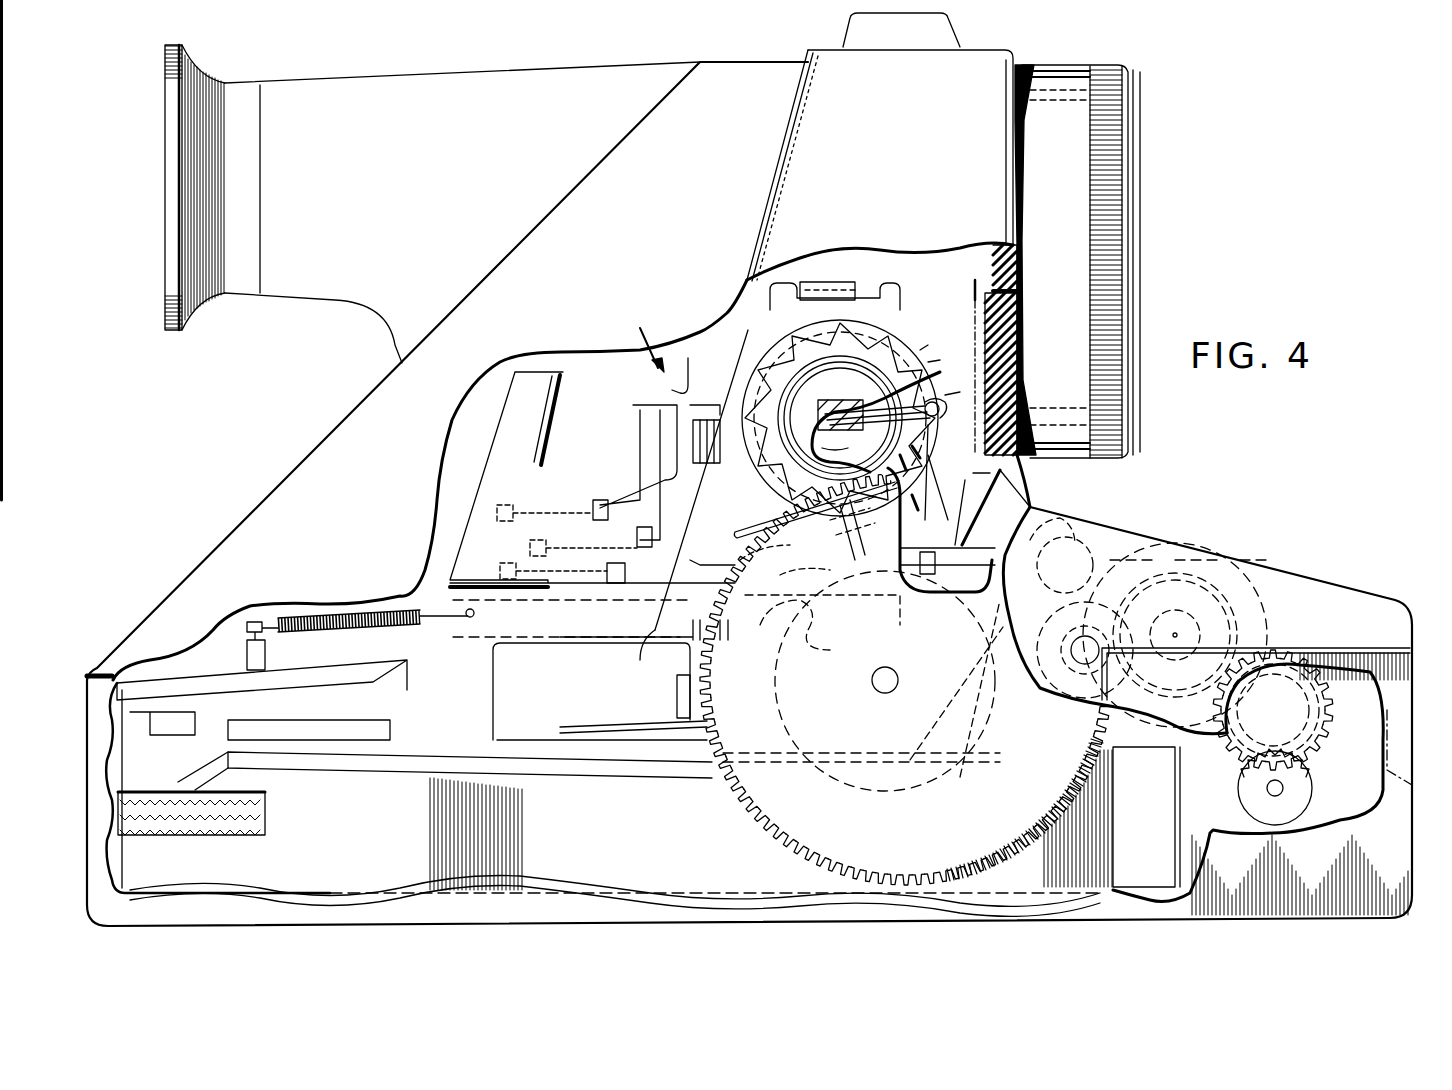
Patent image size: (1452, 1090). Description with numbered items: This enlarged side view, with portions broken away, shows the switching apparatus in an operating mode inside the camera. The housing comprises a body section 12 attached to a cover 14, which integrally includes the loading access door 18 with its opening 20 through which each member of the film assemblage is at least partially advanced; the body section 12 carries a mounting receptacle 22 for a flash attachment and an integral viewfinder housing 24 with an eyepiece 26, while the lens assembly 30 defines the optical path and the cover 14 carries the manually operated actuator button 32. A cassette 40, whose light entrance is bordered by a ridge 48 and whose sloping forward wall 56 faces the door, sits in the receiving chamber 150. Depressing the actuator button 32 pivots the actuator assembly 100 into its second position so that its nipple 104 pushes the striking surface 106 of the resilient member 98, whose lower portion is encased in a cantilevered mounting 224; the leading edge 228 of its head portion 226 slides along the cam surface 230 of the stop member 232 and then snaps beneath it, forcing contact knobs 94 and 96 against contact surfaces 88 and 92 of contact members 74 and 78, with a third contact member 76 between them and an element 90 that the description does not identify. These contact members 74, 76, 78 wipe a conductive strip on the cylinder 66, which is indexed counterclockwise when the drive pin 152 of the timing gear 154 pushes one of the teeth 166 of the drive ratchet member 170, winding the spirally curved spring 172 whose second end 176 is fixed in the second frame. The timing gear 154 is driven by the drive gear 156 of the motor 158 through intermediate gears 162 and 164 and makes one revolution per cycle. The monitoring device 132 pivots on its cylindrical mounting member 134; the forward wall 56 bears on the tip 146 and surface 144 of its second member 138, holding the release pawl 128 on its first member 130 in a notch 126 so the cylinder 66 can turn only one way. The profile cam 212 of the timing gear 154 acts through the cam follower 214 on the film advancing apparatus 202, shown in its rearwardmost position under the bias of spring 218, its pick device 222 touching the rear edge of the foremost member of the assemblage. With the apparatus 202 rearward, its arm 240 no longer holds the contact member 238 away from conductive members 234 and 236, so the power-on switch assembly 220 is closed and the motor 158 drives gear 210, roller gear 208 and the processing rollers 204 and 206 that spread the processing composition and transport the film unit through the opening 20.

The body section 12 is at (647, 270).
The cover 14 is at (900, 192).
The loading access door 18 is at (1412, 823).
The opening 20 is at (1395, 717).
The mounting receptacle 22 is at (950, 30).
The viewfinder housing 24 is at (325, 80).
The eyepiece 26 is at (205, 72).
The lens assembly 30 is at (1100, 64).
The actuator button 32 is at (970, 312).
The cassette 40 is at (336, 836).
The ridge 48 is at (540, 758).
The forward wall 56 is at (618, 765).
The cylinder 66 is at (905, 330).
The contact member 74 is at (805, 505).
The contact member 76 is at (853, 543).
The contact member 78 is at (862, 550).
The contact surface 88 is at (895, 458).
The wire 90 is at (924, 462).
The contact surface 92 is at (941, 530).
The contact knob 94 is at (920, 450).
The contact knob 96 is at (926, 474).
The resilient member 98 is at (936, 487).
The actuator assembly 100 is at (1022, 470).
The nipple 104 is at (952, 384).
The striking surface 106 is at (942, 413).
The notches 126 is at (805, 348).
The release pawl 128 is at (768, 554).
The first member 130 is at (975, 540).
The monitoring device 132 is at (1048, 531).
The cylindrical mounting member 134 is at (1072, 558).
The second member 138 is at (911, 669).
The surface 144 is at (956, 696).
The tip 146 is at (900, 770).
The receiving chamber 150 is at (130, 690).
The drive pin 152 is at (788, 572).
The timing gear 154 is at (750, 812).
The drive gear 156 is at (1218, 575).
The motor 158 is at (1280, 600).
The intermediate gear 162 is at (1118, 548).
The intermediate gear 164 is at (1085, 647).
The teeth 166 is at (950, 356).
The drive ratchet member 170 is at (935, 337).
The spirally curved spring 172 is at (800, 388).
The second end 176 is at (745, 540).
The film advancing apparatus 202 is at (505, 418).
The roller 204 is at (1335, 712).
The roller 206 is at (1300, 775).
The roller gear 208 is at (1335, 680).
The gear 210 is at (1215, 600).
The profile cam 212 is at (838, 678).
The cam follower 214 is at (825, 622).
The spring 218 is at (352, 630).
The power-on switch assembly 220 is at (642, 337).
The pick device 222 is at (222, 768).
The cantilevered mounting 224 is at (1035, 500).
The head portion 226 is at (862, 425).
The leading edge 228 is at (842, 454).
The cam surface 230 is at (855, 398).
The stop member 232 is at (840, 368).
The conductive member 234 is at (645, 410).
The conductive member 236 is at (710, 484).
The contact member 238 is at (700, 375).
The arm 240 is at (565, 375).